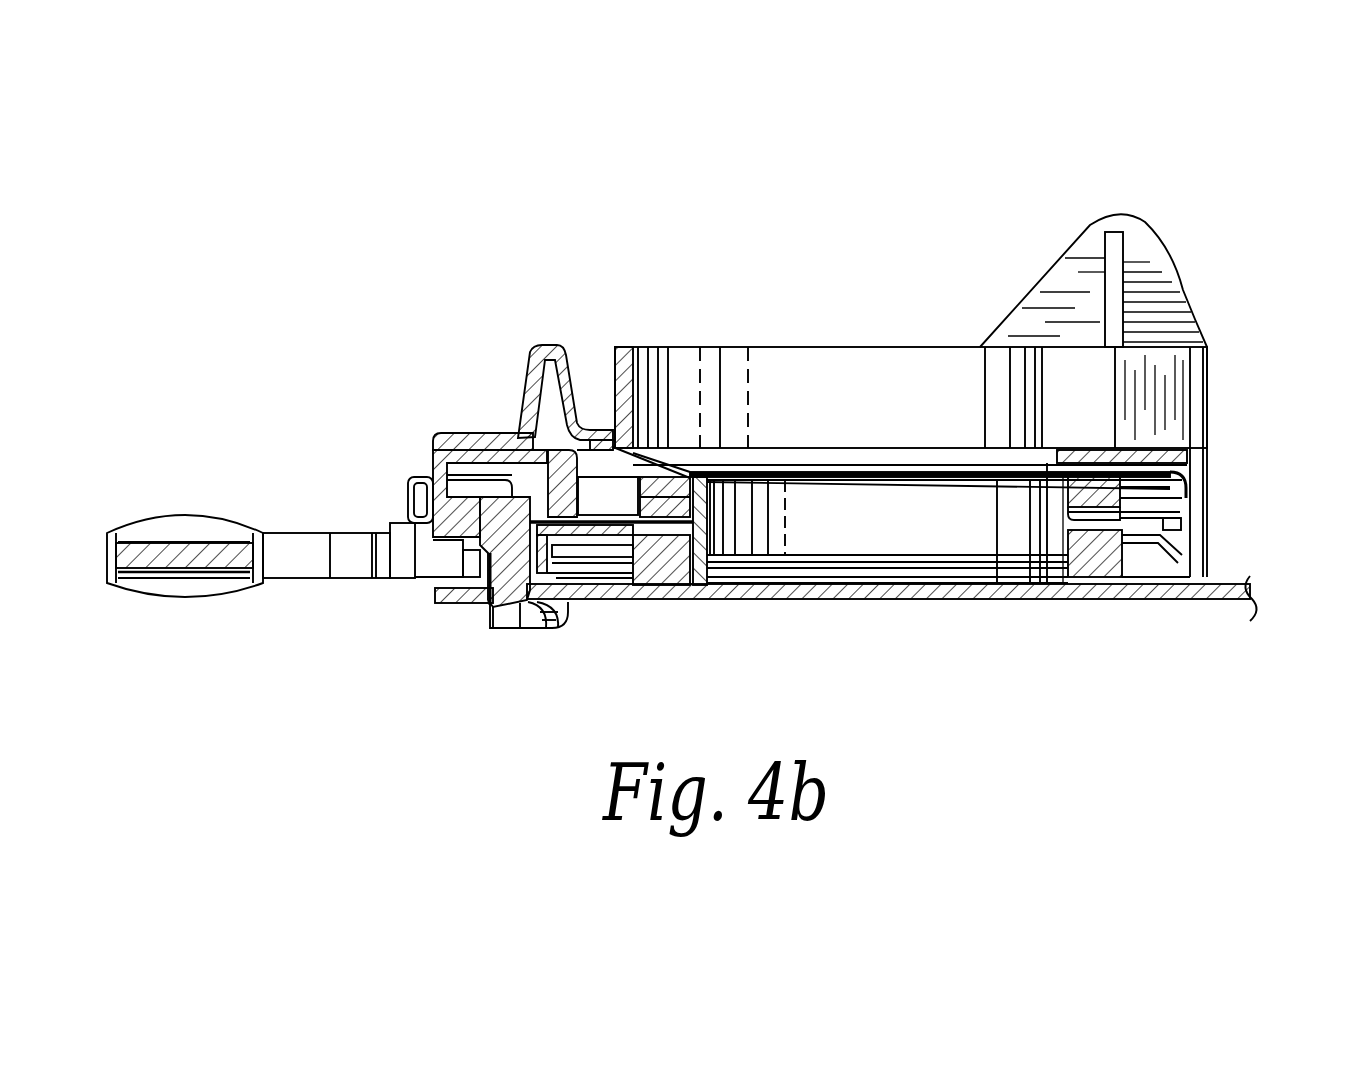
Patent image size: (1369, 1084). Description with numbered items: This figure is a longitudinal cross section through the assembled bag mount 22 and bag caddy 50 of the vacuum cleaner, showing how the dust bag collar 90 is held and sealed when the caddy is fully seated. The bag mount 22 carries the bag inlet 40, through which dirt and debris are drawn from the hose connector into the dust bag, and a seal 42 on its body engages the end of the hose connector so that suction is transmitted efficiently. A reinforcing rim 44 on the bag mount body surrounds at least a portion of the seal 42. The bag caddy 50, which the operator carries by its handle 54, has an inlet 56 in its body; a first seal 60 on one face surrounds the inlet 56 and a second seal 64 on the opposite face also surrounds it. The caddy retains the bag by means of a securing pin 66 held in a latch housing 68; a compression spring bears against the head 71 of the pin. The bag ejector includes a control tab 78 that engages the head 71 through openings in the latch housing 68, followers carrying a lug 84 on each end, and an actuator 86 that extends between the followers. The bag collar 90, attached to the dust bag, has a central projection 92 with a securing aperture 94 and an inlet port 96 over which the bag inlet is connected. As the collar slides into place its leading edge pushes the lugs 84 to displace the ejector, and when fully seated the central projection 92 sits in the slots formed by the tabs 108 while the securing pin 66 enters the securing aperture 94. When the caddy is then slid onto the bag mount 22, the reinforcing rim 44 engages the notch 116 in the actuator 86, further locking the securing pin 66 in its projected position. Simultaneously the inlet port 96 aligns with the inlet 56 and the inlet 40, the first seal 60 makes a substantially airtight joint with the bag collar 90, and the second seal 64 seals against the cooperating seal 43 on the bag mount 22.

The bag mount 22 is at (1248, 363).
The bag inlet 40 is at (906, 388).
The seal 42 is at (678, 373).
The cooperating seal 43 is at (1143, 491).
The reinforcing rim 44 is at (637, 355).
The bag caddy 50 is at (388, 763).
The handle 54 is at (178, 535).
The inlet 56 is at (923, 530).
The first seal 60 is at (665, 586).
The second seal 64 is at (1123, 499).
The securing pin 66 is at (498, 611).
The latch housing 68 is at (443, 471).
The head 71 is at (505, 485).
The control tab 78 is at (545, 475).
The lug 84 is at (471, 570).
The actuator 86 is at (543, 386).
The bag collar 90 is at (1064, 606).
The central projection 92 is at (441, 601).
The securing aperture 94 is at (531, 620).
The inlet port 96 is at (821, 598).
The tabs 108 is at (525, 625).
The notch 116 is at (620, 458).